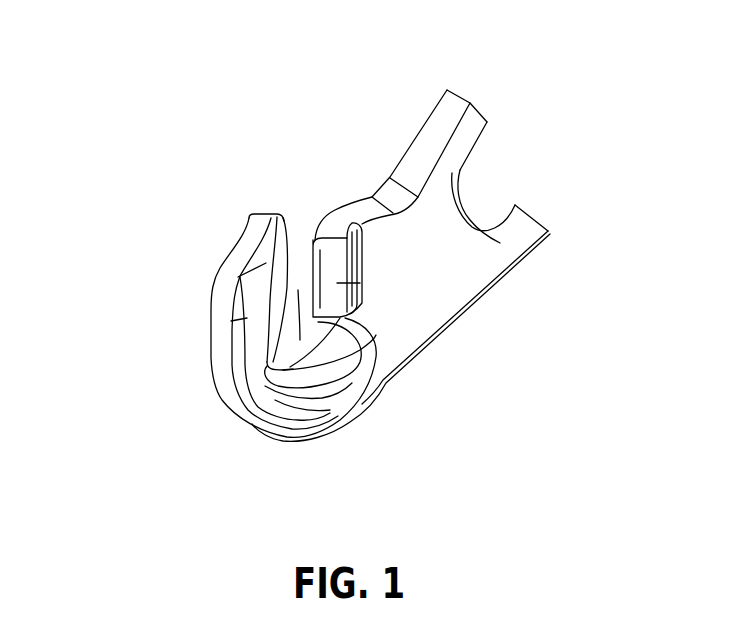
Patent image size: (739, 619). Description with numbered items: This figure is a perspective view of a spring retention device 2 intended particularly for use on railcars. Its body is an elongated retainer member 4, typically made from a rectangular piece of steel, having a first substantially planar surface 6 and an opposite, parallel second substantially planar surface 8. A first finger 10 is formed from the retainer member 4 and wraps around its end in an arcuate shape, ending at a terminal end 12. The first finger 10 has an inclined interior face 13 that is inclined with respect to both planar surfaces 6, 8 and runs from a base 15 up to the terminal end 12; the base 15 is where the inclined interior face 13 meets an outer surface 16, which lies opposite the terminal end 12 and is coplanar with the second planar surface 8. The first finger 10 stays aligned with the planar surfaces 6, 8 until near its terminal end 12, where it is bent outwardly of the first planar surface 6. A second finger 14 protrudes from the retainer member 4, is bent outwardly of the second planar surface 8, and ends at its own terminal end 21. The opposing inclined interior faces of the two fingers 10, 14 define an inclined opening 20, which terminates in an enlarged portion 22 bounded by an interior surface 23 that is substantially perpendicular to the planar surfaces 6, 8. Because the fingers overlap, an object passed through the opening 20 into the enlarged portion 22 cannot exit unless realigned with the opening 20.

The spring retention device 2 is at (203, 110).
The retainer member 4 is at (502, 278).
The first substantially planar surface 6 is at (432, 104).
The second substantially planar surface 8 is at (437, 275).
The first finger 10 is at (222, 331).
The terminal end 12 is at (264, 212).
The inclined interior face 13 is at (298, 290).
The second finger 14 is at (337, 226).
The base 15 is at (272, 297).
The outer surface 16 is at (257, 352).
The opening 20 is at (298, 290).
The terminal end 21 is at (455, 197).
The enlarged portion 22 is at (300, 340).
The interior surface 23 is at (340, 352).